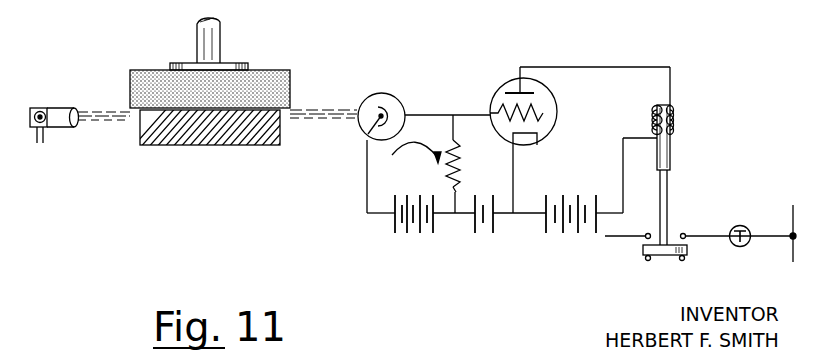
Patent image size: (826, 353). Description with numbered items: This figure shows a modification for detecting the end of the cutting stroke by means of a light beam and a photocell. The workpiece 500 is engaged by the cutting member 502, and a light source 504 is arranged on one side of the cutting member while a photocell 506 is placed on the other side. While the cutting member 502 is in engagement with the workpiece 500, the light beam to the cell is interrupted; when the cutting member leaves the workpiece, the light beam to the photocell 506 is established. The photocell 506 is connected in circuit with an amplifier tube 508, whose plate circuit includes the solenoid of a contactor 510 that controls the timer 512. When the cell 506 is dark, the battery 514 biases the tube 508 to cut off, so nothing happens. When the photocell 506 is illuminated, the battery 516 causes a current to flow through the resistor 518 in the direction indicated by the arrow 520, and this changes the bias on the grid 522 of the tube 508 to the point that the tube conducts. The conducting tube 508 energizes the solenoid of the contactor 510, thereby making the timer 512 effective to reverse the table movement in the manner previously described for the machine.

The workpiece 500 is at (199, 145).
The cutting member 502 is at (279, 70).
The light source 504 is at (63, 108).
The photocell 506 is at (393, 95).
The amplifier tube 508 is at (557, 100).
The contactor 510 is at (672, 113).
The timer 512 is at (742, 226).
The battery 514 is at (490, 238).
The battery 516 is at (403, 237).
The resistor 518 is at (463, 166).
The arrow 520 is at (413, 164).
The grid 522 is at (496, 108).